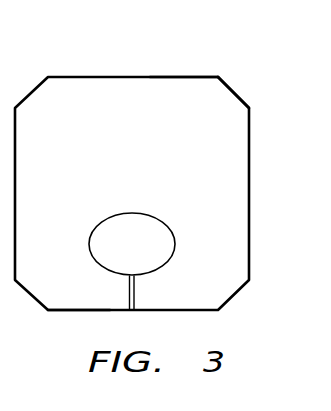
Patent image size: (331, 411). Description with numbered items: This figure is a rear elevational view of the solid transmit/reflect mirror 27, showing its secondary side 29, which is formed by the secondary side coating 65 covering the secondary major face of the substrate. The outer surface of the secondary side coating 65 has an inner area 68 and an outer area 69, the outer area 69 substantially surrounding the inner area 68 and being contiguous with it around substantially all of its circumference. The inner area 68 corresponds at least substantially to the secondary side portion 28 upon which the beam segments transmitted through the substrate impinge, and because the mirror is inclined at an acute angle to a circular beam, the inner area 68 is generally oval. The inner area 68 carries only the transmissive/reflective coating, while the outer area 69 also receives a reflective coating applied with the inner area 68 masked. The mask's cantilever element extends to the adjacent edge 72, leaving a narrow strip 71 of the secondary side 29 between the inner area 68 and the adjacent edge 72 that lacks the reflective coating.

The solid transmit/reflect mirror 27 is at (93, 66).
The outer area 69 is at (163, 88).
The secondary side 29 is at (219, 105).
The secondary side coating 65 is at (146, 155).
The secondary side portion 28 is at (99, 221).
The inner area 68 is at (146, 258).
The narrow strip 71 is at (135, 286).
The adjacent edge 72 is at (65, 312).